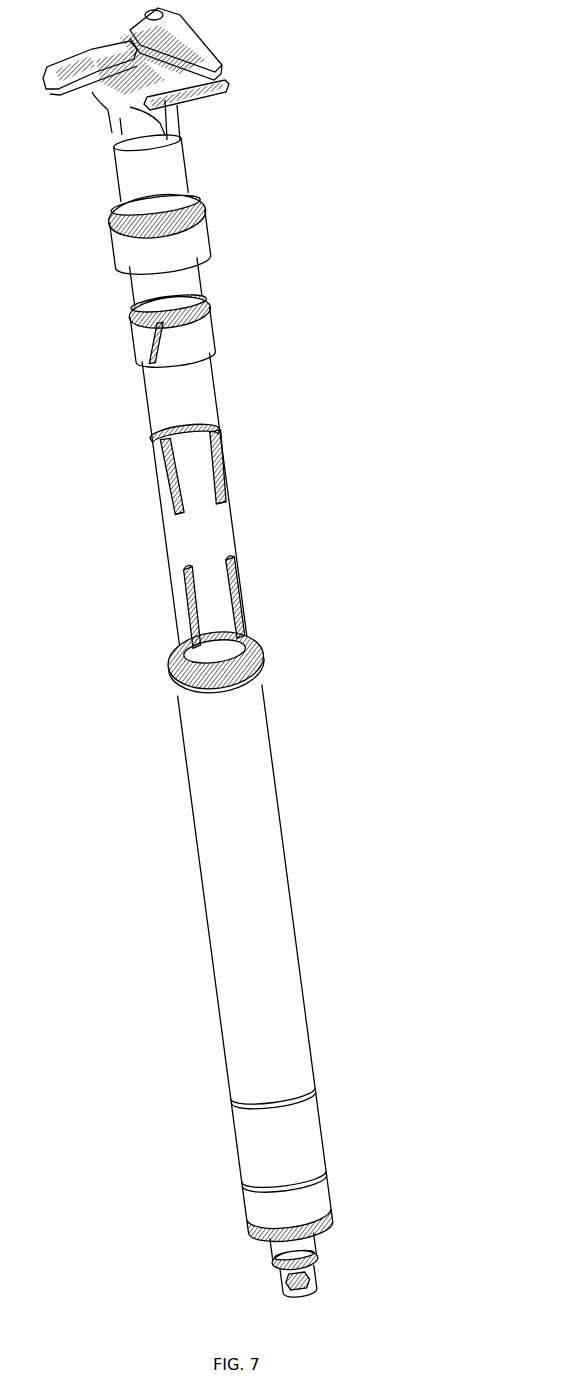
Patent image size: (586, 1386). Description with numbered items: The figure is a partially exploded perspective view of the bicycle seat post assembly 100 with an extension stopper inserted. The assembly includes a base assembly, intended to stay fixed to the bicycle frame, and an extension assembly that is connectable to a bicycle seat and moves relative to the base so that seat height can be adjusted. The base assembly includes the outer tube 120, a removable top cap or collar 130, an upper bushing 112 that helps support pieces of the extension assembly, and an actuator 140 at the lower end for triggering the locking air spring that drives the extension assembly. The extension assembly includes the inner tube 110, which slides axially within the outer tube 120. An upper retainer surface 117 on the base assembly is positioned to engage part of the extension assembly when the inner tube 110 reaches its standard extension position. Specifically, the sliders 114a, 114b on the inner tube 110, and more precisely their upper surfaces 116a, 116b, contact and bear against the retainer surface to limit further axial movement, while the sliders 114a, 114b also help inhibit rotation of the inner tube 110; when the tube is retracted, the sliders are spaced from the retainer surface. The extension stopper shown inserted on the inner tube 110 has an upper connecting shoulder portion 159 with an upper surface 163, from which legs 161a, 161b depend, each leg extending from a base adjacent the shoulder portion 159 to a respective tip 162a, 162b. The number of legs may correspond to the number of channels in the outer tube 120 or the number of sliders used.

The bicycle seat post assembly 100 is at (244, 47).
The inner tube 110 is at (182, 142).
The collar 130 is at (207, 222).
The upper bushing 112 is at (208, 317).
The upper retainer surface 117 is at (203, 353).
The shoulder portion 159 is at (195, 437).
The upper surface 163 is at (152, 435).
The leg 161a is at (222, 452).
The leg 161b is at (170, 462).
The tip 162a is at (228, 502).
The tip 162b is at (175, 512).
The upper surface 116a is at (235, 557).
The upper surface 116b is at (185, 568).
The slider 114a is at (242, 607).
The slider 114b is at (188, 617).
The outer tube 120 is at (287, 863).
The actuator 140 is at (313, 1237).